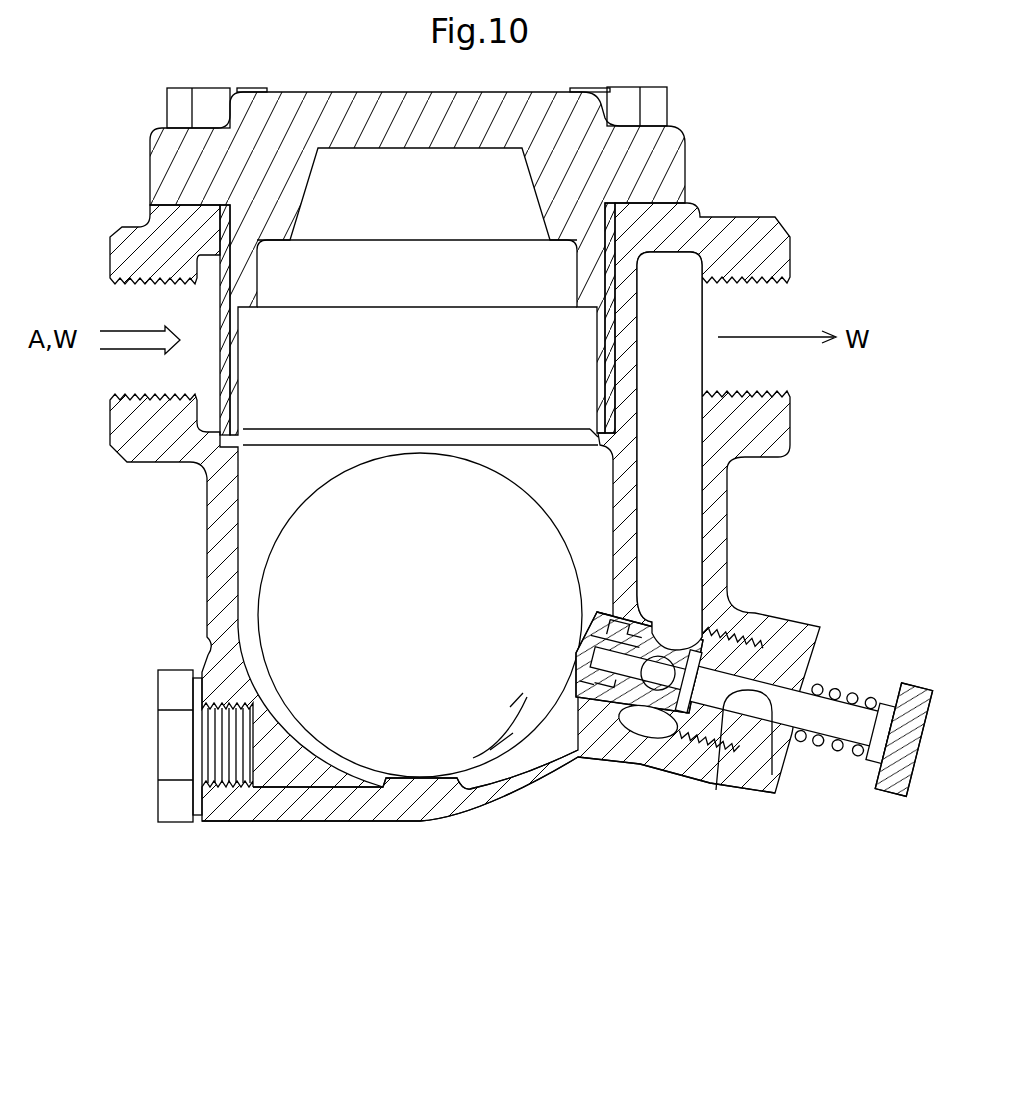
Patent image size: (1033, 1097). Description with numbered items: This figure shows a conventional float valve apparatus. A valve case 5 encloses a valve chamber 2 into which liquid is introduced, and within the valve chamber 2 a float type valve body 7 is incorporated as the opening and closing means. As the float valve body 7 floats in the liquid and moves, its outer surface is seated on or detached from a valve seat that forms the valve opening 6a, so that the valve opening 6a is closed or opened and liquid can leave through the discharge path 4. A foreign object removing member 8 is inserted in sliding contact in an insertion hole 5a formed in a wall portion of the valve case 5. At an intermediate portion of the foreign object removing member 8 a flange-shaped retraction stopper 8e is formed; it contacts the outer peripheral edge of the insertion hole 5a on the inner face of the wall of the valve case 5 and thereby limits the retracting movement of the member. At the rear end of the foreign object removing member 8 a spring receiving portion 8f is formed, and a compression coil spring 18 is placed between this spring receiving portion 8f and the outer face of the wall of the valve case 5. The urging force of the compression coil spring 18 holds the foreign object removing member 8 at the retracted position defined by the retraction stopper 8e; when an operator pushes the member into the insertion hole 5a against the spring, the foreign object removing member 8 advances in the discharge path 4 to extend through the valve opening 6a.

The valve chamber 2 is at (266, 505).
The discharge path 4 is at (687, 560).
The valve case 5 is at (342, 810).
The insertion hole 5a is at (745, 775).
The valve opening 6a is at (578, 655).
The float type valve body 7 is at (513, 523).
The foreign object removing member 8 is at (910, 684).
The retraction stopper 8e is at (650, 735).
The spring receiving portion 8f is at (883, 792).
The compression coil spring 18 is at (830, 748).